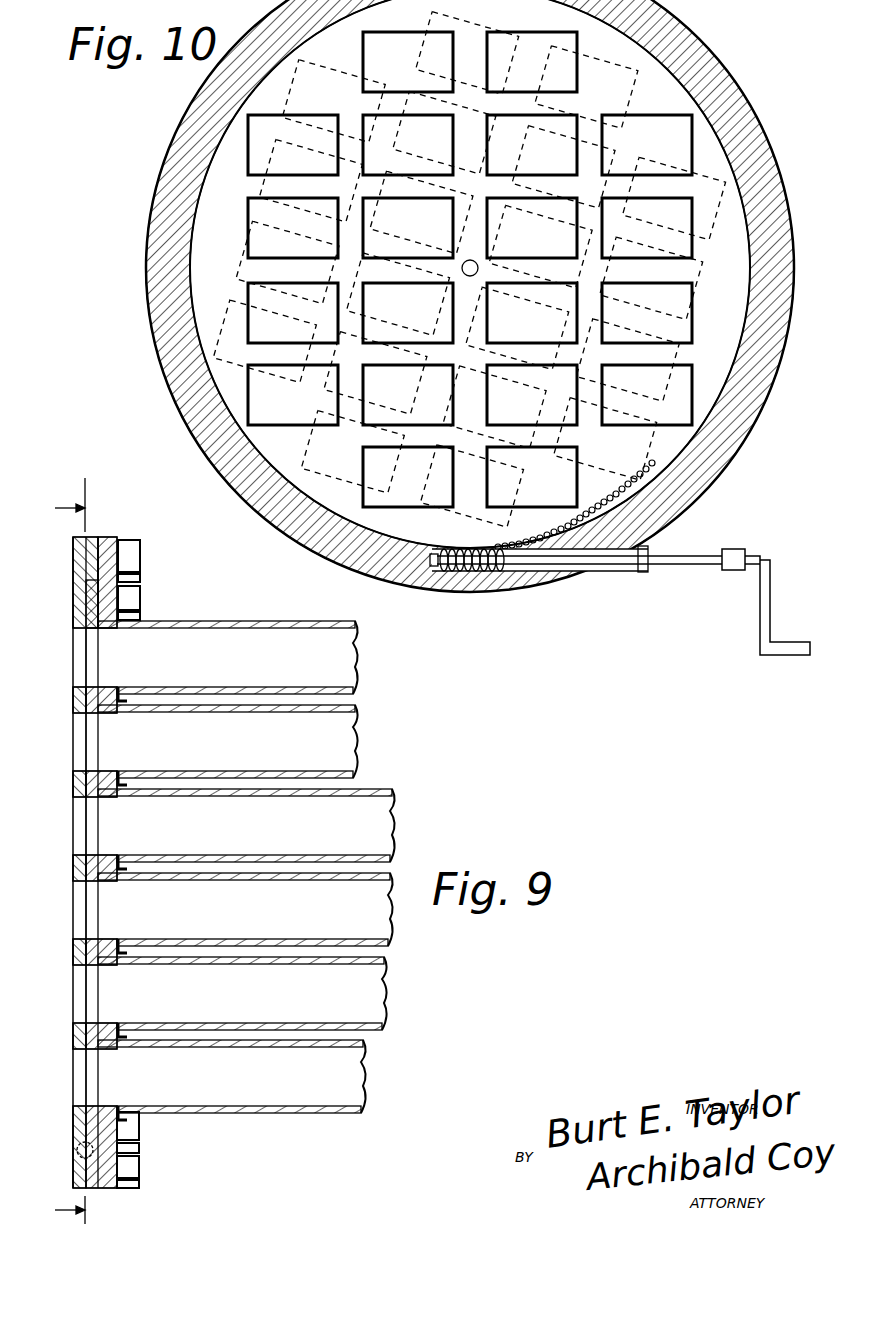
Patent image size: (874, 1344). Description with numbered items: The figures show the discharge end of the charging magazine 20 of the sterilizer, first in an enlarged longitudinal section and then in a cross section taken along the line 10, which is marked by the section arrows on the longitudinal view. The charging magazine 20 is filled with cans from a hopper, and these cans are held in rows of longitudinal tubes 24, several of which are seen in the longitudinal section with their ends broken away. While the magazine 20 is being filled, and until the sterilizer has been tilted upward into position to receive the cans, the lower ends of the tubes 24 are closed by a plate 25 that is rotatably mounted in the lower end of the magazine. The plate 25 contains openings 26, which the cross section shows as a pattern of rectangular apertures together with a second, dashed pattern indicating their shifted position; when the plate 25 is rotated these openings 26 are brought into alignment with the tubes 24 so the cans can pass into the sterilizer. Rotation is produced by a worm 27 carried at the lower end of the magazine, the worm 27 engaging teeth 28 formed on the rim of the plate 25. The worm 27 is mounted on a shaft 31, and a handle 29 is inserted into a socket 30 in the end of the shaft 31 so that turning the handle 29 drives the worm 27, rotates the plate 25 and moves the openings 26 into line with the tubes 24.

In FIG. 9, the section line 10 is at (56, 851).
In FIG. 9, the charging magazine 20 is at (84, 560).
In FIG. 9, the longitudinal tubes 24 is at (110, 770).
In FIG. 10, the plate 25 is at (330, 502).
In FIG. 9, the plate 25 is at (92, 606).
In FIG. 10, the openings 26 is at (262, 324).
In FIG. 9, the openings 26 is at (92, 660).
In FIG. 10, the worm 27 is at (492, 568).
In FIG. 10, the teeth 28 is at (540, 548).
In FIG. 10, the handle 29 is at (764, 627).
In FIG. 10, the socket 30 is at (736, 566).
In FIG. 10, the shaft 31 is at (672, 562).
In FIG. 9, the shaft 31 is at (77, 1150).